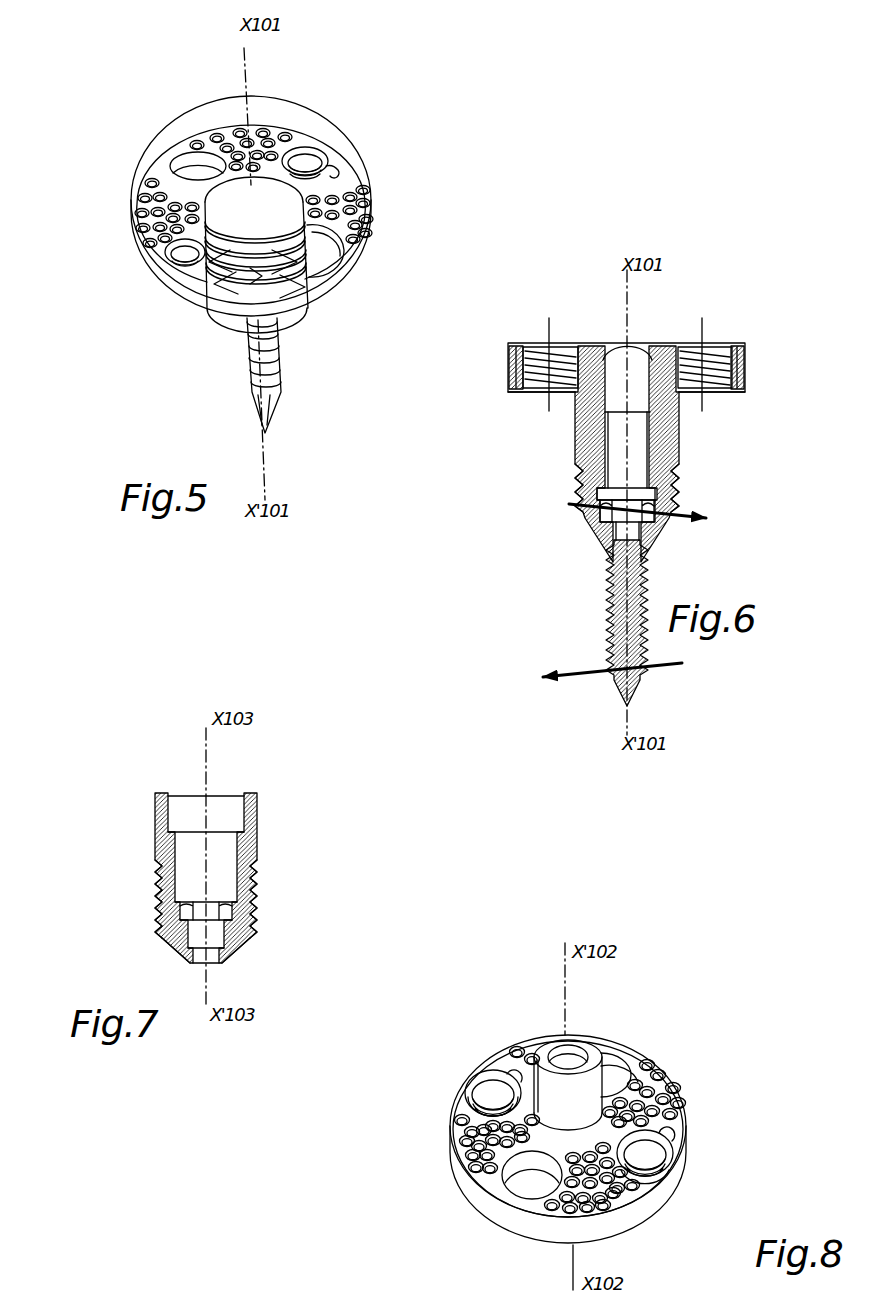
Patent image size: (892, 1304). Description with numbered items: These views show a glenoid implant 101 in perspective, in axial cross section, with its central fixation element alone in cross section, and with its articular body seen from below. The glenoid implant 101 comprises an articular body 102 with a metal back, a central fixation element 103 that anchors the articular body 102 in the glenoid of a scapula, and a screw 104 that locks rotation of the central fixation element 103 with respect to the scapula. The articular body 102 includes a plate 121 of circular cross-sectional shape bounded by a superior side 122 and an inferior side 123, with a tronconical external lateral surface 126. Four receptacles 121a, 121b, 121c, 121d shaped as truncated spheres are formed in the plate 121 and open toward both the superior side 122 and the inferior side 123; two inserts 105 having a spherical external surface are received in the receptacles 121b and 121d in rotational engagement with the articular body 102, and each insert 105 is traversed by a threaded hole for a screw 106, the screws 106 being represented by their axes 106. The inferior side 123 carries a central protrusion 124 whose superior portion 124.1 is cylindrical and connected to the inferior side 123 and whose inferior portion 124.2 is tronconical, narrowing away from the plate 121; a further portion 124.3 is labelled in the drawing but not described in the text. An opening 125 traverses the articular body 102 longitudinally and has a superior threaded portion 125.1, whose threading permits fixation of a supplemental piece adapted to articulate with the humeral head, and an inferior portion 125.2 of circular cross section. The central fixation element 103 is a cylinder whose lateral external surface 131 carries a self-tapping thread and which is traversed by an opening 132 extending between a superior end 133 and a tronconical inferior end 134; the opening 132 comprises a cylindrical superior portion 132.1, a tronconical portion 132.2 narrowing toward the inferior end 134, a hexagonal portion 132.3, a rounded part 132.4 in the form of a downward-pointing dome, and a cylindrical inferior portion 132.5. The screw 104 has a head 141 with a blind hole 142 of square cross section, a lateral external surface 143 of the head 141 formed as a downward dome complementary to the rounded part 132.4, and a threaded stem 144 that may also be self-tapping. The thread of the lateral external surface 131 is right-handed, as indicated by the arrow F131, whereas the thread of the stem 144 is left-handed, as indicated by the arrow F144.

In FIG. 5, the glenoid implant 101 is at (33, 303).
In FIG. 6, the glenoid implant 101 is at (408, 518).
In FIG. 5, the articular body 102 is at (125, 238).
In FIG. 6, the articular body 102 is at (530, 410).
In FIG. 8, the articular body 102 is at (437, 1168).
In FIG. 5, the central fixation element 103 is at (202, 318).
In FIG. 6, the central fixation element 103 is at (568, 519).
In FIG. 7, the central fixation element 103 is at (148, 780).
In FIG. 5, the screw 104 is at (232, 387).
In FIG. 6, the screw 104 is at (609, 586).
In FIG. 5, the inserts 105 is at (352, 180).
In FIG. 6, the inserts 105 is at (583, 343).
In FIG. 8, the inserts 105 is at (478, 1094).
In FIG. 6, the screws 106 is at (628, 354).
In FIG. 5, the plate 121 is at (352, 144).
In FIG. 6, the plate 121 is at (747, 378).
In FIG. 8, the plate 121 is at (688, 1174).
In FIG. 5, the receptacle 121a is at (172, 166).
In FIG. 8, the receptacle 121a is at (621, 1058).
In FIG. 5, the receptacle 121b is at (309, 150).
In FIG. 8, the receptacle 121b is at (658, 1176).
In FIG. 5, the receptacle 121c is at (331, 251).
In FIG. 8, the receptacle 121c is at (525, 1190).
In FIG. 5, the receptacle 121d is at (195, 259).
In FIG. 8, the receptacle 121d is at (453, 1141).
In FIG. 5, the superior side 122 is at (290, 90).
In FIG. 6, the superior side 122 is at (517, 338).
In FIG. 8, the superior side 122 is at (643, 1231).
In FIG. 5, the inferior side 123 is at (354, 233).
In FIG. 6, the inferior side 123 is at (513, 398).
In FIG. 8, the inferior side 123 is at (491, 1061).
In FIG. 8, the central protrusion 124 is at (786, 1119).
In FIG. 8, the superior portion of the central protrusion 124.1 is at (687, 1123).
In FIG. 8, the inferior portion of the central protrusion 124.2 is at (670, 1073).
In FIG. 8, the boss cylindrical portion 124.3 is at (550, 1114).
In FIG. 6, the opening 125 is at (633, 361).
In FIG. 8, the opening 125 is at (576, 1056).
In FIG. 6, the superior threaded portion 125.1 is at (642, 400).
In FIG. 6, the inferior portion of the opening 125.2 is at (682, 463).
In FIG. 5, the external lateral surface 126 is at (195, 113).
In FIG. 6, the external lateral surface 126 is at (505, 366).
In FIG. 8, the external lateral surface 126 is at (532, 1228).
In FIG. 6, the lateral external surface 131 is at (690, 499).
In FIG. 7, the lateral external surface 131 is at (153, 886).
In FIG. 7, the opening 132 is at (219, 811).
In FIG. 7, the superior portion of the opening 132.1 is at (238, 822).
In FIG. 7, the tronconical portion 132.2 is at (223, 868).
In FIG. 7, the hexagonal portion 132.3 is at (223, 915).
In FIG. 7, the rounded part 132.4 is at (215, 939).
In FIG. 7, the inferior portion of the opening 132.5 is at (211, 961).
In FIG. 7, the superior end 133 is at (260, 797).
In FIG. 7, the inferior end 134 is at (176, 946).
In FIG. 6, the head 141 is at (580, 507).
In FIG. 6, the blind hole 142 is at (606, 528).
In FIG. 6, the lateral external surface of the head 143 is at (646, 540).
In FIG. 6, the threaded stem 144 is at (638, 678).
In FIG. 6, the arrow F131 is at (642, 528).
In FIG. 6, the arrow F144 is at (612, 686).